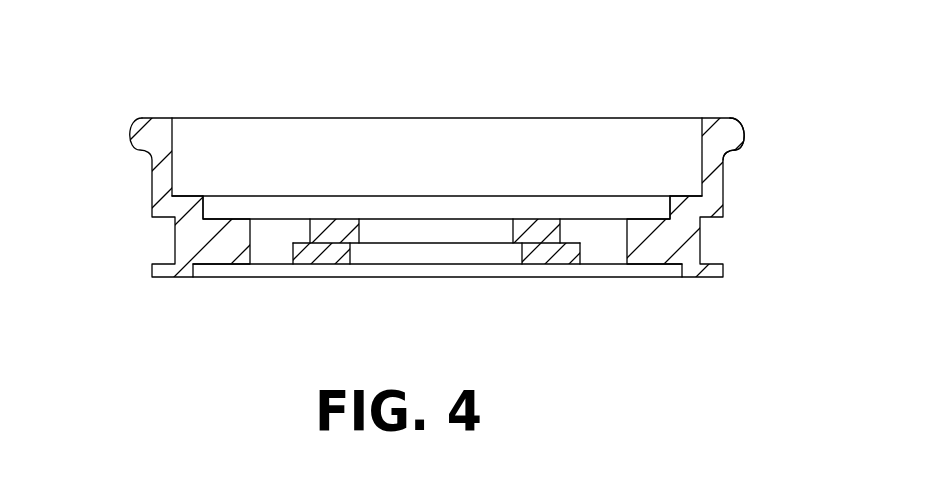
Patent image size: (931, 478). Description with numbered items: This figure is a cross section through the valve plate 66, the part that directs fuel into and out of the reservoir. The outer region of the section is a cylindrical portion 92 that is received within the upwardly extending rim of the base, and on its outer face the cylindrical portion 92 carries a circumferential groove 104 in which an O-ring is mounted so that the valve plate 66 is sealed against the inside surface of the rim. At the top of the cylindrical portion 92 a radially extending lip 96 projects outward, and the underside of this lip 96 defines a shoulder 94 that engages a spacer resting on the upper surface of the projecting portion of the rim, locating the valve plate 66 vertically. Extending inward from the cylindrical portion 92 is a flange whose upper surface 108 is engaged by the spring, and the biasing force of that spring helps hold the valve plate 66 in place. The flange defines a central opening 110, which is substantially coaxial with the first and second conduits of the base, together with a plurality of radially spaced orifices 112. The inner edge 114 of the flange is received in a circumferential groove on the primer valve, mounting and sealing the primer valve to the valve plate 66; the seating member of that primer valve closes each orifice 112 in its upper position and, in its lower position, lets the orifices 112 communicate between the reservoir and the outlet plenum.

The valve plate 66 is at (718, 73).
The cylindrical portion 92 is at (723, 188).
The shoulder 94 is at (735, 149).
The radially extending lip 96 is at (740, 120).
The circumferential groove 104 is at (167, 240).
The upper surface 108 is at (228, 226).
The opening 110 is at (431, 252).
The orifices 112 is at (265, 256).
The inner edge 114 is at (514, 229).